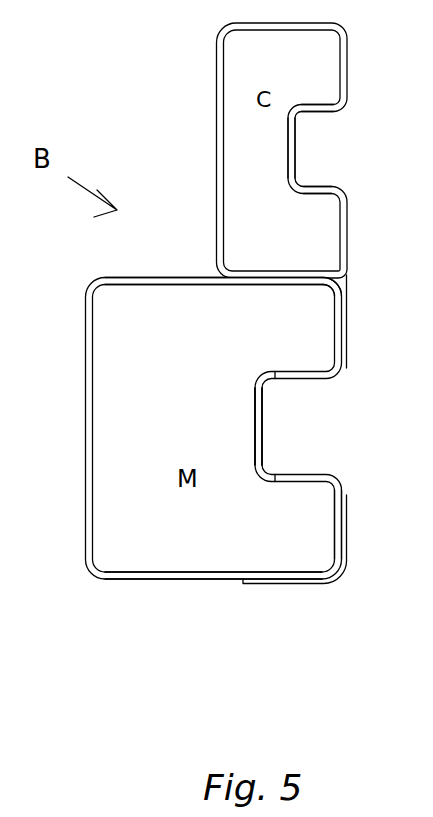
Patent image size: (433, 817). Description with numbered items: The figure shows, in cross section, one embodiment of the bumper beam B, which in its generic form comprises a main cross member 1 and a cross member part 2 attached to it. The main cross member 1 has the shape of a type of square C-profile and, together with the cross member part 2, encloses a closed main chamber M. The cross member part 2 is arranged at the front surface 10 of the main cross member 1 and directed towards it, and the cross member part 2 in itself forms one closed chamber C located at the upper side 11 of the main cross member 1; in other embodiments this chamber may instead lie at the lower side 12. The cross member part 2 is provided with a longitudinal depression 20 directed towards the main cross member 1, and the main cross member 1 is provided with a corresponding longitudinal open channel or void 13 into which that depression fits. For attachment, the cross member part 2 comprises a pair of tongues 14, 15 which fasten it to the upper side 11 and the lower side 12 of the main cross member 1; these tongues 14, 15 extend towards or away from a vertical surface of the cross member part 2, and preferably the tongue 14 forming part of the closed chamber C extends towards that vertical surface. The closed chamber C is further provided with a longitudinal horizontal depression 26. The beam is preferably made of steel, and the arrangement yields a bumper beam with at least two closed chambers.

The main cross member 1 is at (113, 578).
The cross member part 2 is at (347, 264).
The front surface 10 is at (340, 530).
The upper side 11 is at (203, 277).
The lower side 12 is at (222, 581).
The longitudinal open channel or void 13 is at (215, 427).
The tongue 14 is at (333, 285).
The tongue 15 is at (312, 585).
The longitudinal depression 20 is at (262, 430).
The longitudinal horizontal depression 26 is at (297, 150).